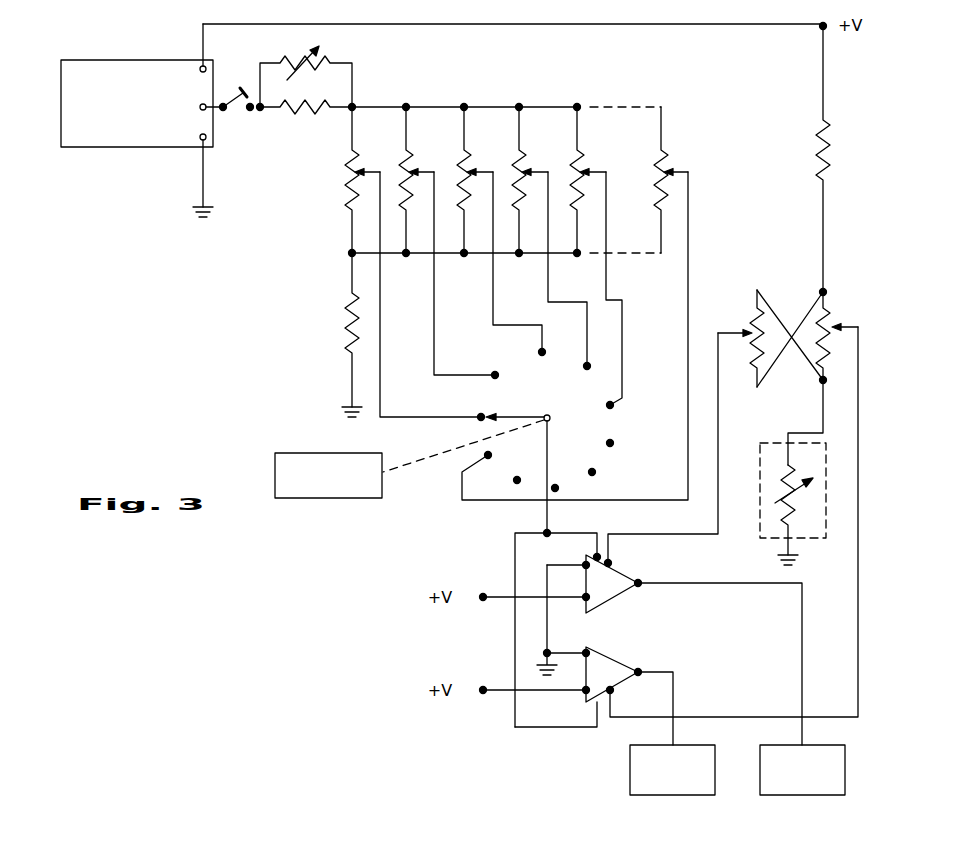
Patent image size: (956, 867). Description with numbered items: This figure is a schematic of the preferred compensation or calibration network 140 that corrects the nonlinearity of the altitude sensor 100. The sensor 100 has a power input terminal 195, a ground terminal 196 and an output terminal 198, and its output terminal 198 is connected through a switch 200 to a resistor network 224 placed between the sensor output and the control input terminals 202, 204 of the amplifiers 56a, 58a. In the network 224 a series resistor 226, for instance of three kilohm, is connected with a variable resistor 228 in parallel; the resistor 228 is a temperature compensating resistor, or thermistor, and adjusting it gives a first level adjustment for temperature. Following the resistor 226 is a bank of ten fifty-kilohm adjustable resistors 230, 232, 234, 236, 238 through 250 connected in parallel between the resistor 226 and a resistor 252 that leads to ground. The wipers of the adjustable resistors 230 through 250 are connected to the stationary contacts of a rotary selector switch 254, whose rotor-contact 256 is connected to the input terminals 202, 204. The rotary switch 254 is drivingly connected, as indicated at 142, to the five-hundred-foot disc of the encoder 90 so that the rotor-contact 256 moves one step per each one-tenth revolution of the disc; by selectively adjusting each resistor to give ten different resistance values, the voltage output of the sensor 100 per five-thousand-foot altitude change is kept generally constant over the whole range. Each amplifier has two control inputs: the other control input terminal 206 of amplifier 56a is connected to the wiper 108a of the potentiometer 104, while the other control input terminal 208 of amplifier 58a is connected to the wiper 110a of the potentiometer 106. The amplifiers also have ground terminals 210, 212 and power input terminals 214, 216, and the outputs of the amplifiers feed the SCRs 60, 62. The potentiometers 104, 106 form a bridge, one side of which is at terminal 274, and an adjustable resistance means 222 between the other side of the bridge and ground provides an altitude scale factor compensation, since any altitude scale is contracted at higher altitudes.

The compensation network 140 is at (183, 34).
The altitude sensor 100 is at (105, 148).
The power input terminal 195 is at (213, 69).
The output terminal 198 is at (200, 109).
The ground terminal 196 is at (214, 137).
The switch 200 is at (241, 118).
The series resistor 226 is at (328, 115).
The variable resistor 228 is at (327, 66).
The resistor network 224 is at (316, 249).
The adjustable resistor 230 is at (345, 193).
The adjustable resistor 232 is at (402, 170).
The adjustable resistor 234 is at (460, 170).
The adjustable resistor 236 is at (514, 170).
The adjustable resistor 238 is at (572, 170).
The adjustable resistor 250 is at (662, 188).
The resistor 252 is at (340, 335).
The rotary selector switch 254 is at (426, 433).
The rotor-contact 256 is at (512, 417).
The driving connection 142 is at (437, 455).
The encoder 90 is at (333, 499).
The control input terminal 202 is at (601, 557).
The control input terminal 206 is at (611, 563).
The ground terminal 210 is at (582, 563).
The amplifier 56a is at (612, 601).
The power input terminal 214 is at (582, 601).
The ground terminal 212 is at (587, 652).
The amplifier 58a is at (618, 662).
The power input terminal 216 is at (583, 693).
The control input terminal 208 is at (614, 690).
The control input terminal 204 is at (594, 704).
The SCR 60 is at (678, 797).
The SCR 62 is at (792, 797).
The potentiometer 104 is at (752, 316).
The wiper 108a is at (727, 332).
The potentiometer 106 is at (833, 312).
The wiper 110a is at (846, 327).
The terminal 274 is at (830, 382).
The resistance means 222 is at (848, 470).